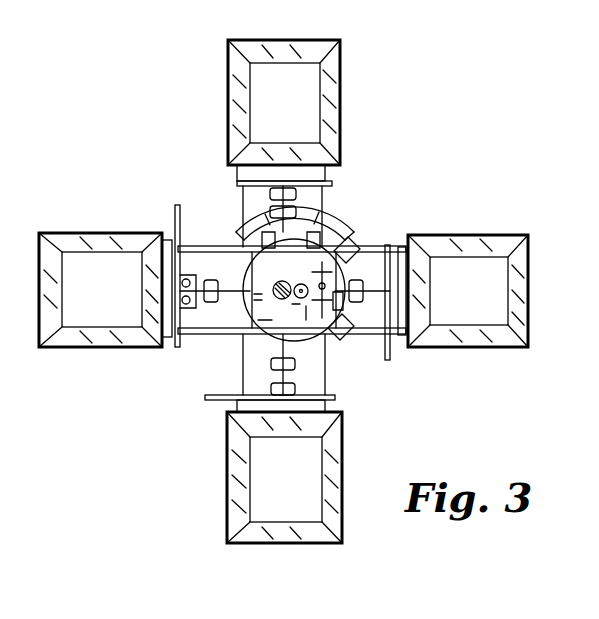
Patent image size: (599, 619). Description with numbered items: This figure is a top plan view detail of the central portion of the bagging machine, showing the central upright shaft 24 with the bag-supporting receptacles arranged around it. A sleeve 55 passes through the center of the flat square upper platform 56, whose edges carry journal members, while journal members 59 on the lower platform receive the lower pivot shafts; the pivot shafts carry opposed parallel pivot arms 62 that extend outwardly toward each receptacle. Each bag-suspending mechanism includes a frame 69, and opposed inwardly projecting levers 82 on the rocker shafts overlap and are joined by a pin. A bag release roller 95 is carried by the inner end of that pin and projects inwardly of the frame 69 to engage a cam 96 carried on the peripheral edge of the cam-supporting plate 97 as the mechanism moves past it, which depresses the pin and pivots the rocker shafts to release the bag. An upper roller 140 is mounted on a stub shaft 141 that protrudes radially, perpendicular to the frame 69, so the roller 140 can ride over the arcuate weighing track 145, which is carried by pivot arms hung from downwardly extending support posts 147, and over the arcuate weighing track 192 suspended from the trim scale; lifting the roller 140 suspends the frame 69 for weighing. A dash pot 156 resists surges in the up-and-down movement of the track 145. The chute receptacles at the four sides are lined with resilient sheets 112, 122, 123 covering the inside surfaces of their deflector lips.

The resilient sheet 112 is at (322, 52).
The resilient sheets 122 is at (242, 124).
The resilient sheet 123 is at (258, 148).
The frame 69 is at (296, 170).
The levers 82 is at (335, 181).
The pivot arms 62 is at (190, 245).
The stub shaft 141 is at (195, 252).
The upper roller 140 is at (215, 282).
The support posts 147 is at (228, 326).
The cam 96 is at (246, 238).
The bag release roller 95 is at (276, 380).
The cam-supporting plate 97 is at (222, 218).
The arcuate weighing track 192 is at (240, 222).
The weighing track 145 is at (328, 245).
The journal members 59 is at (346, 254).
The upper platform 56 is at (278, 283).
The upright shaft 24 is at (350, 252).
The sleeve 55 is at (280, 300).
The dash pot 156 is at (303, 297).